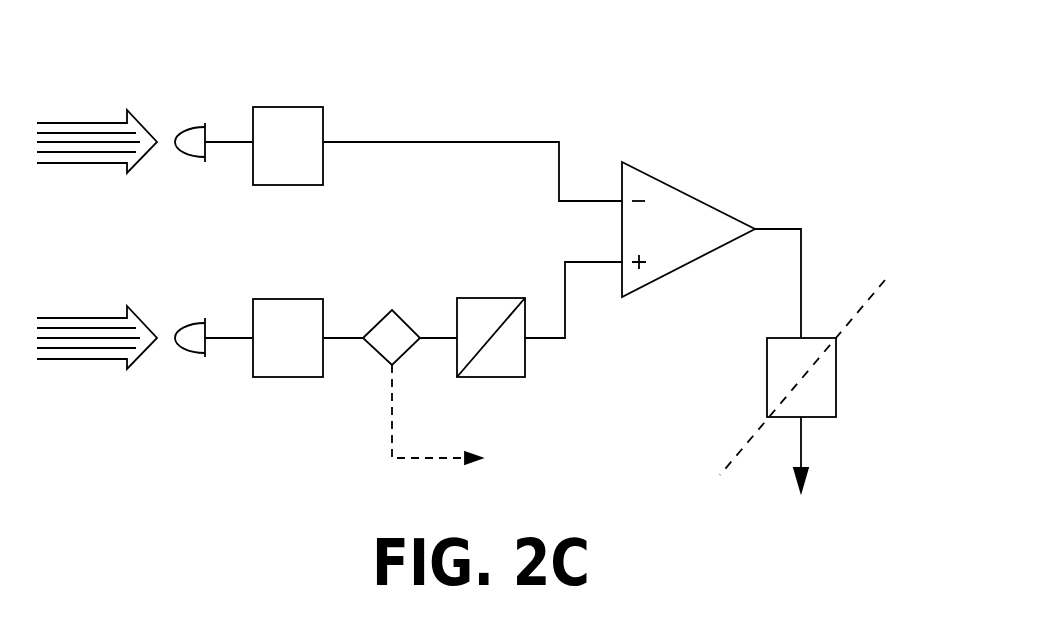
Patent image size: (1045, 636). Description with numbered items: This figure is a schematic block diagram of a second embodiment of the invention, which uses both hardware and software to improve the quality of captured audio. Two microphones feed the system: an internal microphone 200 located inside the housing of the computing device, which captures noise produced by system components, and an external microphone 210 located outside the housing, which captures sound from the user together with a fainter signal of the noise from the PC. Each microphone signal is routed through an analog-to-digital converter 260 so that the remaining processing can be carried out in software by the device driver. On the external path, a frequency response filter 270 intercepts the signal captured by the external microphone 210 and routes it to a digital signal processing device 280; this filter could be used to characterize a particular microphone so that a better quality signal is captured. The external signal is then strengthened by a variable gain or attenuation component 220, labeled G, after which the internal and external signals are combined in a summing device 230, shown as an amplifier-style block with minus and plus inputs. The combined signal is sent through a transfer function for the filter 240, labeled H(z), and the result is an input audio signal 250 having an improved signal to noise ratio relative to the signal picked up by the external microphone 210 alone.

The internal microphone 200 is at (145, 173).
The external microphone 210 is at (145, 371).
The variable gain or attenuation component 220 is at (562, 363).
The summing device 230 is at (702, 240).
The transfer function for the filter 240 is at (830, 377).
The input audio signal 250 is at (813, 469).
The analog-to-digital converter 260 is at (289, 239).
The frequency response filter 270 is at (402, 303).
The digital signal processing (DSP) device 280 is at (480, 417).